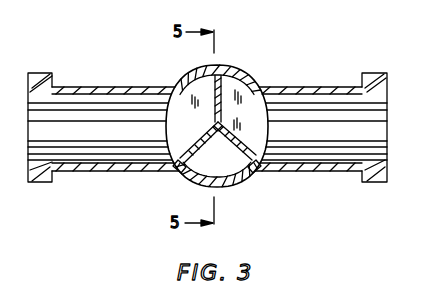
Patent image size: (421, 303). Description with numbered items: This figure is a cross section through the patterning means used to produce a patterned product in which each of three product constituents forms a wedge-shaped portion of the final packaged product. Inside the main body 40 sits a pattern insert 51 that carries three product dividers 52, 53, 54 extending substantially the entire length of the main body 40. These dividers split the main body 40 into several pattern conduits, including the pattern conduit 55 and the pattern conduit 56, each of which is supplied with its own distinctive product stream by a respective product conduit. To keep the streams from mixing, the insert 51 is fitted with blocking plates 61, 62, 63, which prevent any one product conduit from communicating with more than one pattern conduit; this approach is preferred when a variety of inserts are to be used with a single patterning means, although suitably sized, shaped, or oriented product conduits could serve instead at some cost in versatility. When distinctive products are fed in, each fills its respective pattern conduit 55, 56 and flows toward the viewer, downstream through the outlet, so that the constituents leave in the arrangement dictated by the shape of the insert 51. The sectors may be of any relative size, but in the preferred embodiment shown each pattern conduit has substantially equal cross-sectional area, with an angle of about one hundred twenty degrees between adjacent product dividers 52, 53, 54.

The main body 40 is at (255, 81).
The pattern insert 51 is at (211, 123).
The product divider 52 is at (223, 72).
The product divider 53 is at (226, 127).
The product divider 54 is at (176, 142).
The pattern conduit 55 is at (168, 112).
The pattern conduit 56 is at (225, 177).
The blocking plate 61 is at (193, 135).
The blocking plate 62 is at (246, 157).
The blocking plate 63 is at (182, 168).